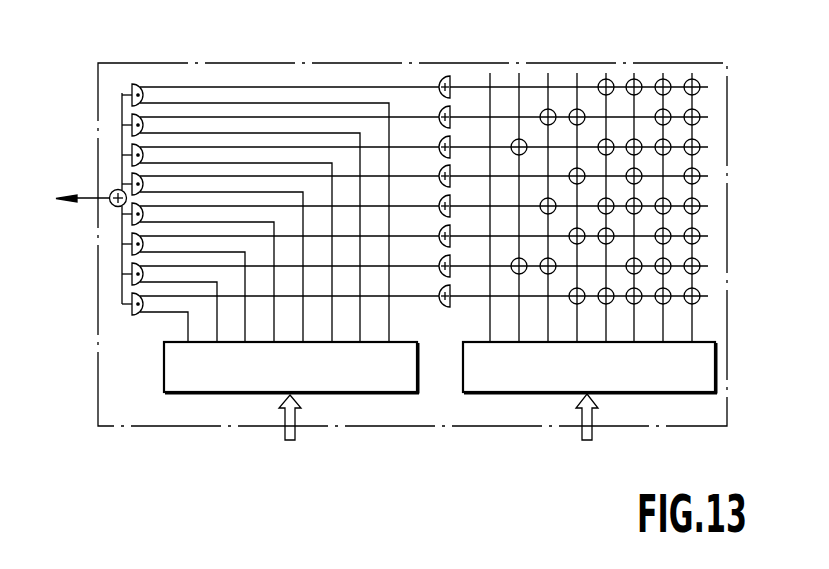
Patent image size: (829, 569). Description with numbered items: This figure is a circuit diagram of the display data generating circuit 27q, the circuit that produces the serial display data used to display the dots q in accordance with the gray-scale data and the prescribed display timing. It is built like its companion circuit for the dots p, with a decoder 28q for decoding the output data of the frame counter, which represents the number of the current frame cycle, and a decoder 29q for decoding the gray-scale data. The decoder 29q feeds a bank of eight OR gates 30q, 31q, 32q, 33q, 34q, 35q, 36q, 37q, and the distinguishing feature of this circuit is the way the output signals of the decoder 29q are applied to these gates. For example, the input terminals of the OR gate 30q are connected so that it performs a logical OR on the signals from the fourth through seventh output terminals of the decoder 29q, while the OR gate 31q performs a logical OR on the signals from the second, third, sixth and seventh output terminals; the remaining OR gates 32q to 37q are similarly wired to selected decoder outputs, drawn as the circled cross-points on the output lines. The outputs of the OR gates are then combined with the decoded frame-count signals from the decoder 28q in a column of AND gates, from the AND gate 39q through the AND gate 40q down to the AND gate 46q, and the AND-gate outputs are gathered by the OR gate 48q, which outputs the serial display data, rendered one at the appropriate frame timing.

The display data generating circuit 27q is at (730, 53).
The decoder 28q is at (395, 397).
The decoder 29q is at (688, 395).
The OR gate 30q is at (440, 94).
The OR gate 31q is at (573, 111).
The OR gate 32q is at (573, 141).
The OR gate 33q is at (573, 170).
The OR gate 34q is at (573, 200).
The OR gate 35q is at (573, 230).
The OR gate 36q is at (573, 260).
The OR gate 37q is at (573, 290).
The AND gate 39q is at (132, 84).
The AND gate 40q is at (122, 118).
The AND gate 46q is at (133, 312).
The OR gate 48q is at (112, 208).